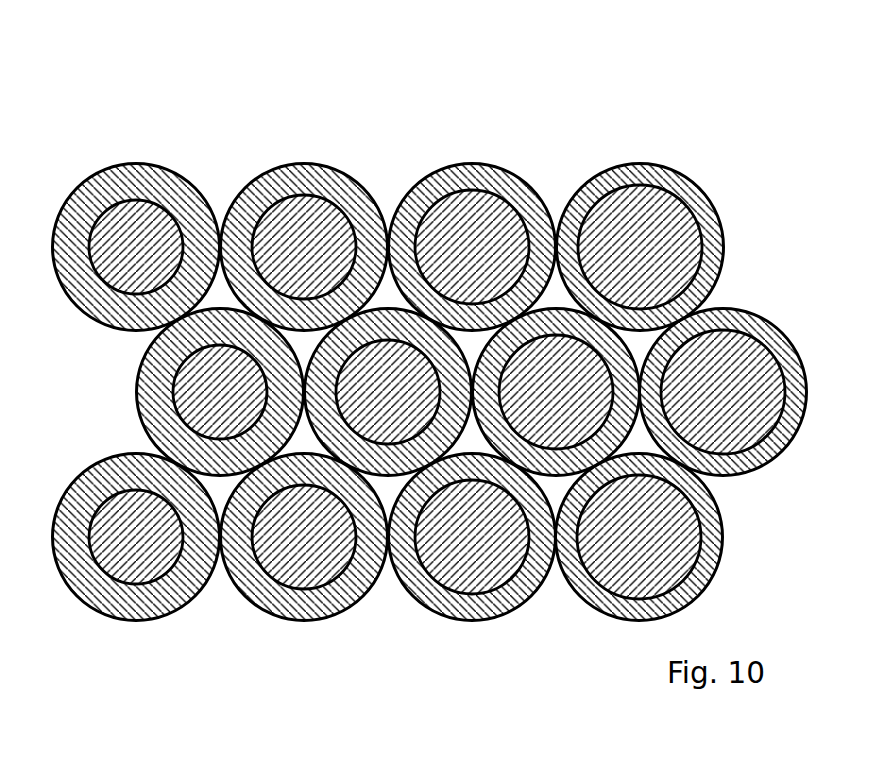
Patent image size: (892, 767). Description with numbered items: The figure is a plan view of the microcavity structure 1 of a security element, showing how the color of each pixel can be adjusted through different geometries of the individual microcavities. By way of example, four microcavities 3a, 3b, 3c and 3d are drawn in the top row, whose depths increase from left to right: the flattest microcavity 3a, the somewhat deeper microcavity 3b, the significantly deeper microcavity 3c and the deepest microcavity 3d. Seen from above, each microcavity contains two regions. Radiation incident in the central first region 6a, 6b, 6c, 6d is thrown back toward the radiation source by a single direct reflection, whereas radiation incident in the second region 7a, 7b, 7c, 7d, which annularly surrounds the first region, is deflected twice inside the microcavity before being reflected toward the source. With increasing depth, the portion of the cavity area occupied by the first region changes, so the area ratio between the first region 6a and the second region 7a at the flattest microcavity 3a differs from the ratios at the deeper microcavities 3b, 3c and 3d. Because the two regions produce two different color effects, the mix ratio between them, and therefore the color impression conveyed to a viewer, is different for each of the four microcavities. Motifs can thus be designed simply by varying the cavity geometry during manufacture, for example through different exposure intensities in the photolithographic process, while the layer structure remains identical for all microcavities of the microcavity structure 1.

The microcavity structure 1 is at (362, 45).
The flattest microcavity 3a is at (173, 112).
The somewhat deeper microcavity 3b is at (358, 182).
The significantly deeper microcavity 3c is at (515, 185).
The deepest microcavity 3d is at (698, 188).
The first region 6a is at (110, 227).
The first region 6b is at (292, 226).
The first region 6c is at (498, 225).
The first region 6d is at (677, 197).
The second region 7a is at (92, 310).
The second region 7b is at (228, 218).
The second region 7c is at (428, 188).
The second region 7d is at (623, 182).